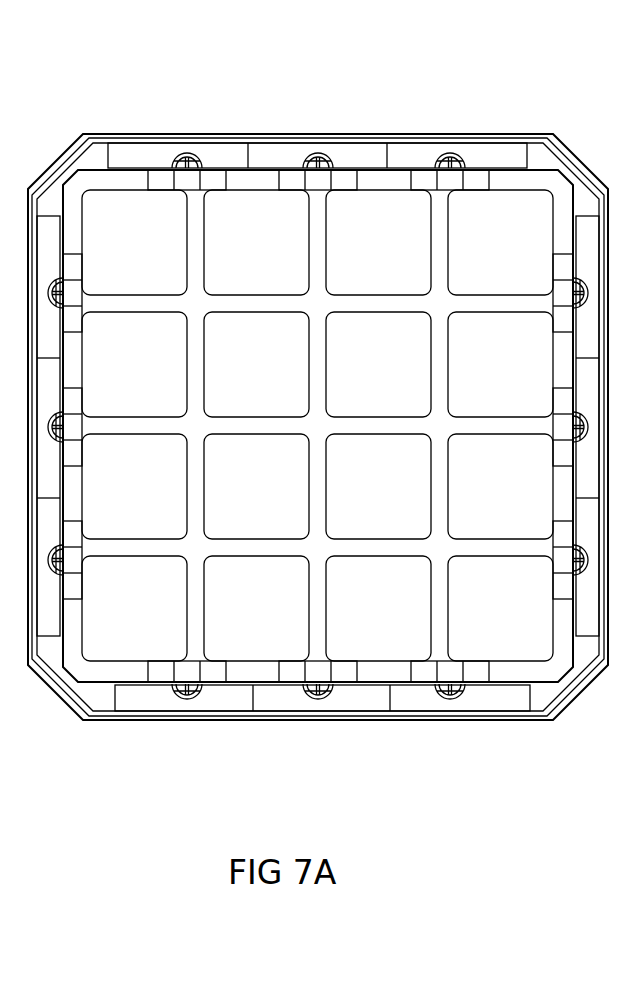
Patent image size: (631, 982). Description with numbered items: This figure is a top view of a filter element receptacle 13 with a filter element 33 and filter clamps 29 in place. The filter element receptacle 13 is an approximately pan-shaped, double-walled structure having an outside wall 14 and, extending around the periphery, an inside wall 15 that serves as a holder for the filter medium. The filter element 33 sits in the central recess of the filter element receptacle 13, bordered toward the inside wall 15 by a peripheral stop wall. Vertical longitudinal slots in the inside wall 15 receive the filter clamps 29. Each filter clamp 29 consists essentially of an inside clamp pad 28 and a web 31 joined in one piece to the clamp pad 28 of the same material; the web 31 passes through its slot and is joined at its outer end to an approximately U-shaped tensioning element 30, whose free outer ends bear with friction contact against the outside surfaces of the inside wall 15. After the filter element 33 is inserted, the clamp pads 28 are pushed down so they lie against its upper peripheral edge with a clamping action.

The filter element receptacle 13 is at (143, 730).
The outside wall 14 is at (455, 715).
The inside wall 15 is at (372, 686).
The clamp pad 28 is at (345, 180).
The filter clamp 29 is at (445, 153).
The tensioning element 30 is at (314, 163).
The web 31 is at (330, 157).
The filter element 33 is at (128, 205).